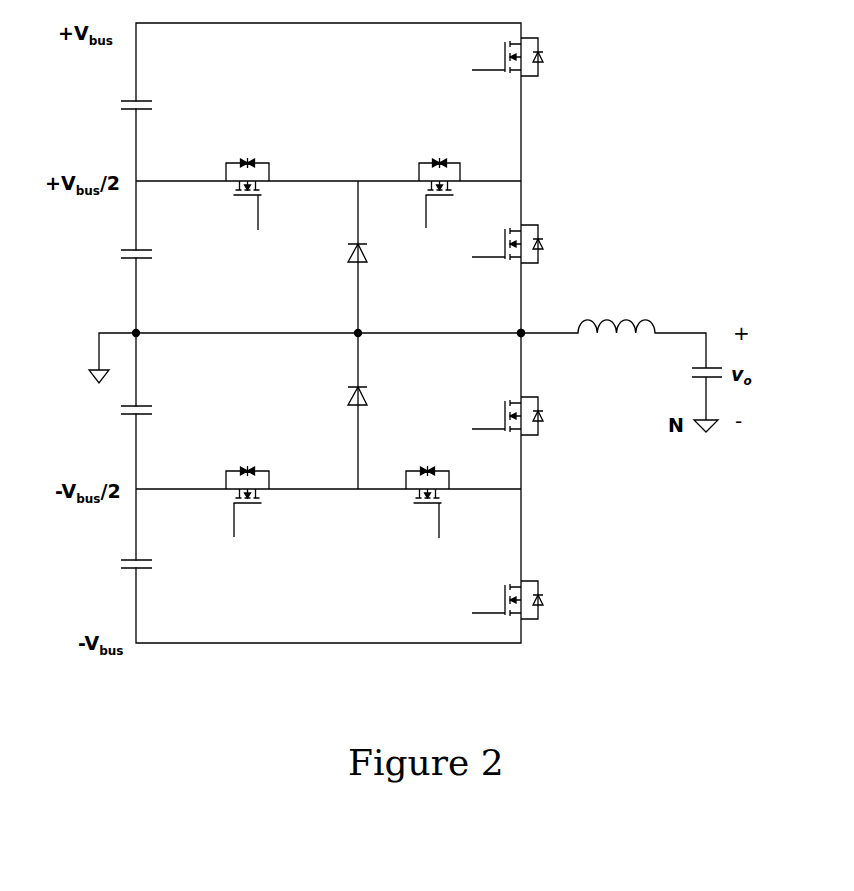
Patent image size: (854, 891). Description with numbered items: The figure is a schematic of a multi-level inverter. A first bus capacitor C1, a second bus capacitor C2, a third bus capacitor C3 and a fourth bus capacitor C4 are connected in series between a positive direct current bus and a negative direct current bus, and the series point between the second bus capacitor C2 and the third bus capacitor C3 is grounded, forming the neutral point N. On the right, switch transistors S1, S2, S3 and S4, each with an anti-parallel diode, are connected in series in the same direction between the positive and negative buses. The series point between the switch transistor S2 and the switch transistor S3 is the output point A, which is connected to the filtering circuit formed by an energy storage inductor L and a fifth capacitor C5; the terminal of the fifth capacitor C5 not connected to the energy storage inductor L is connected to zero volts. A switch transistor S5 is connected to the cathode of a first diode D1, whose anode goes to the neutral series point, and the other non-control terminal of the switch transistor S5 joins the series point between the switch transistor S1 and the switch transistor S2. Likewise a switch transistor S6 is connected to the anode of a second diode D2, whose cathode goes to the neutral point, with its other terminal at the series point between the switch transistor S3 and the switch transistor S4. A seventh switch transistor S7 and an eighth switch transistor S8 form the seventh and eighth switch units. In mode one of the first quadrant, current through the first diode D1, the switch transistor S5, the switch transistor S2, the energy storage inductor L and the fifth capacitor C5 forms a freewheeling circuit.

The first bus capacitor C1 is at (121, 106).
The second bus capacitor C2 is at (121, 256).
The third bus capacitor C3 is at (121, 414).
The fourth bus capacitor C4 is at (121, 569).
The fifth capacitor C5 is at (690, 400).
The switch transistor of an anti-parallel diode S1 is at (504, 57).
The switch transistor of an anti-parallel diode S2 is at (504, 244).
The switch transistor of an anti-parallel diode S3 is at (504, 416).
The switch transistor of an anti-parallel diode S4 is at (504, 600).
The switch transistor of an anti-parallel diode S5 is at (439, 204).
The switch transistor of an anti-parallel diode S6 is at (425, 514).
The switch transistor of an anti-parallel diode S7 is at (247, 204).
The switch transistor of an anti-parallel diode S8 is at (247, 510).
The first diode D1 is at (343, 262).
The second diode D2 is at (343, 404).
The energy storage inductor L is at (613, 327).
The neutral node N is at (112, 343).
The point A is at (534, 320).